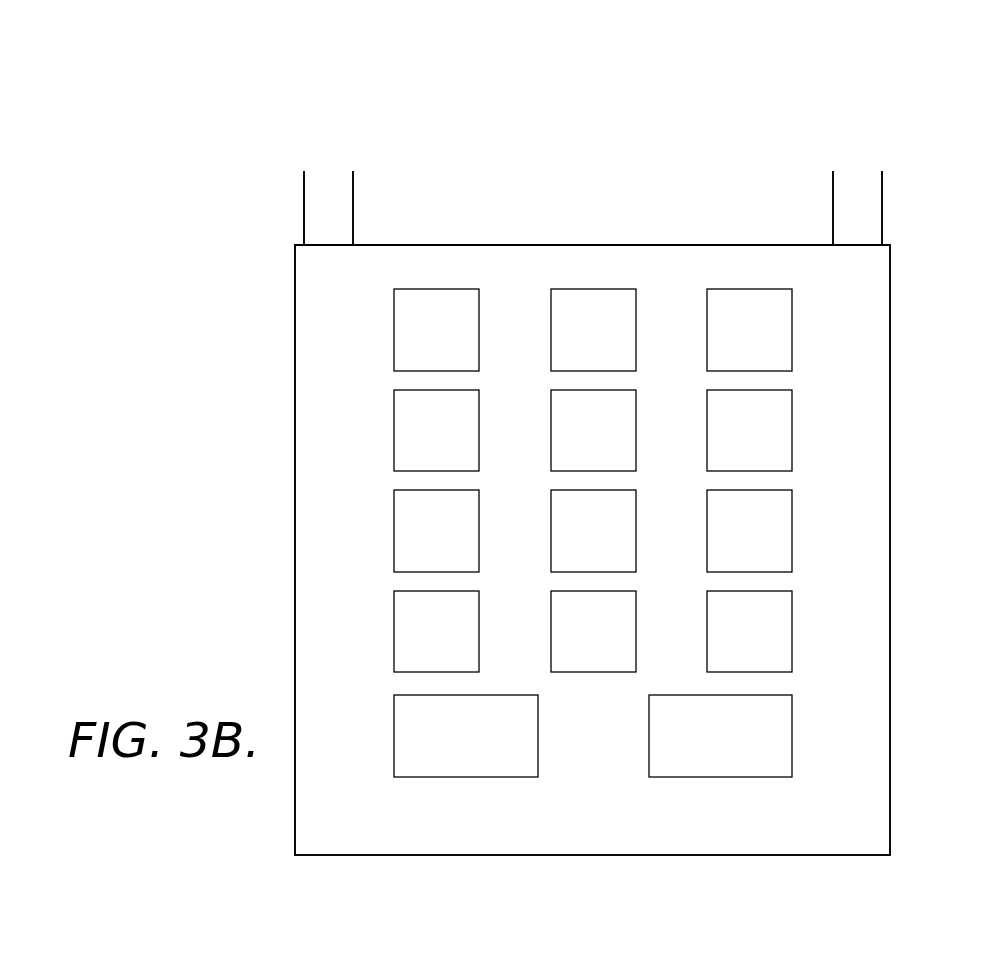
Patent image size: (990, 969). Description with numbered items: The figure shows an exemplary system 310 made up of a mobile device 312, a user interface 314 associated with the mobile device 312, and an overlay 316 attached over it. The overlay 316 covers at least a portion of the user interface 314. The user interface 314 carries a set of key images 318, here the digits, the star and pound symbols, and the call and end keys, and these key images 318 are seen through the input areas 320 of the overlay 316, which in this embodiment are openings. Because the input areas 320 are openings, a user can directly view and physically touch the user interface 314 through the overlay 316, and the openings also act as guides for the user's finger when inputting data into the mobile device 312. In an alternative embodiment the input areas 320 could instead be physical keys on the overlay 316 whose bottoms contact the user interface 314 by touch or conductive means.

The system 310 is at (193, 227).
The mobile device 312 is at (883, 202).
The user interface 314 is at (812, 235).
The overlay 316 is at (891, 498).
The key images 318 is at (798, 533).
The input areas 320 is at (793, 308).